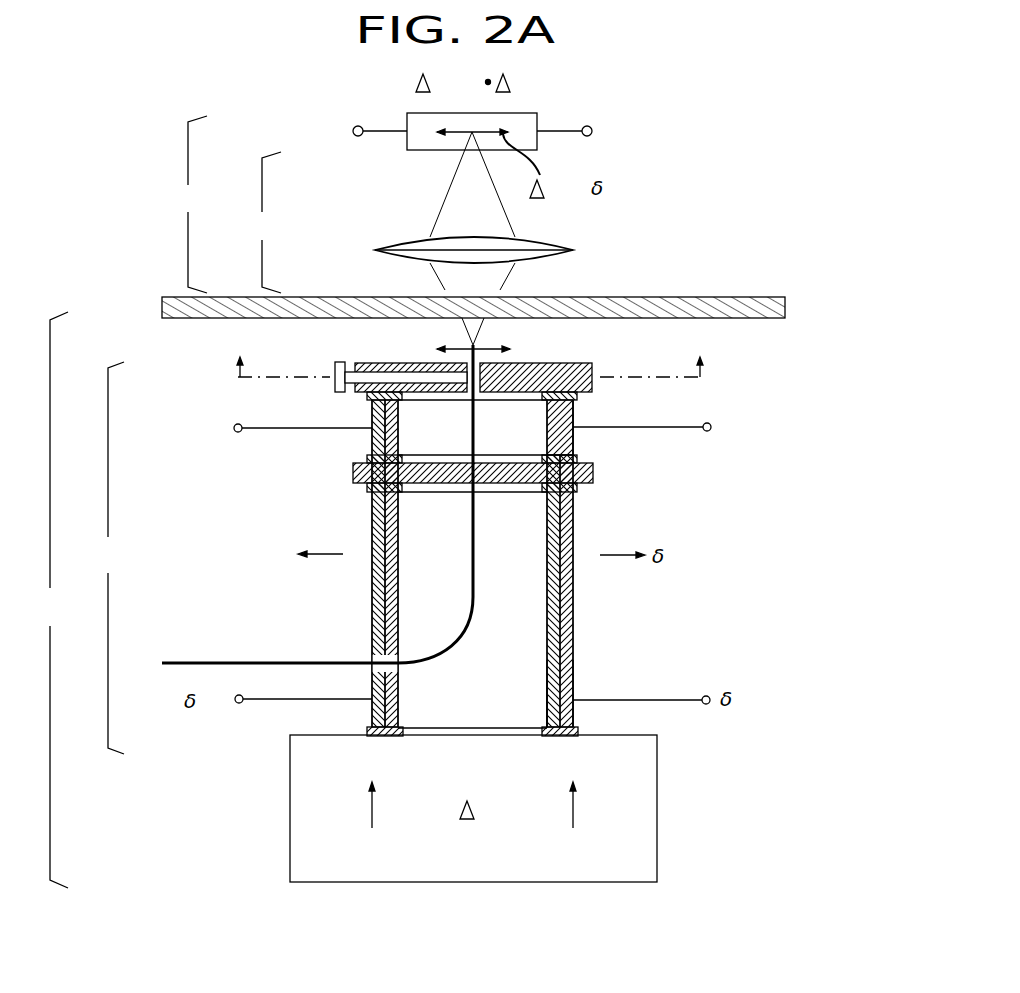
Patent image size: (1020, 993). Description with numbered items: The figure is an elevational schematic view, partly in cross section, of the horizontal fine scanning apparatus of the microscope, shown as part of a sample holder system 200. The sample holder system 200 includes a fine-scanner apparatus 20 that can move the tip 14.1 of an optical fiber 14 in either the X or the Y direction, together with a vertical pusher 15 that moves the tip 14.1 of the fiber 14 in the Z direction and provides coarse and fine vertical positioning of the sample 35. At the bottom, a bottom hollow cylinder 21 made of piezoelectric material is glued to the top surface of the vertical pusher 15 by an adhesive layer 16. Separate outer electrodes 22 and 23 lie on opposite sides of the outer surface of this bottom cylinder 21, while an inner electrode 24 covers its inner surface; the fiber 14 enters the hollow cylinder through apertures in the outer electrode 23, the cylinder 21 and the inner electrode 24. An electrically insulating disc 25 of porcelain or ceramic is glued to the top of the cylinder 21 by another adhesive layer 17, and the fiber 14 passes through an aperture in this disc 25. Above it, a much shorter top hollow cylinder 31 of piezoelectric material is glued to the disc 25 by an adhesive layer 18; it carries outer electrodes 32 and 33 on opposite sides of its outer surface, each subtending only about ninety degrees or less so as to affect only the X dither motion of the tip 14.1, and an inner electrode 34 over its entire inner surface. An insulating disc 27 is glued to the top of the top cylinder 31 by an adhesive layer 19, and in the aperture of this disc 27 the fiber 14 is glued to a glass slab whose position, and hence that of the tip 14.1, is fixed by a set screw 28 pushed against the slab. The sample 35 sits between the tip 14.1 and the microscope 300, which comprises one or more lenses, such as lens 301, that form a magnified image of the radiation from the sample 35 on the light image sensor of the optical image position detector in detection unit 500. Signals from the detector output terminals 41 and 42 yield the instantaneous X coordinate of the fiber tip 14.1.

The optical fiber 14 is at (217, 662).
The tip of the optical fiber 14.1 is at (470, 346).
The vertical pusher 15 is at (636, 815).
The adhesive layer 16 is at (405, 728).
The adhesive layer 17 is at (585, 487).
The adhesive layer 18 is at (416, 455).
The adhesive layer 19 is at (367, 396).
The fine-scanner apparatus 20 is at (109, 558).
The bottom hollow cylinder 21 is at (573, 615).
The outer electrode 22 is at (573, 672).
The outer electrode 23 is at (372, 593).
The inner electrode 24 is at (547, 686).
The electrically insulating disc 25 is at (352, 483).
The insulating disc 27 is at (582, 374).
The set screw 28 is at (338, 364).
The top hollow cylinder 31 is at (578, 438).
The outer electrode 32 is at (578, 418).
The outer electrode 33 is at (367, 442).
The inner electrode 34 is at (547, 424).
The sample 35 is at (788, 300).
The output terminal 41 is at (353, 128).
The output terminal 42 is at (592, 127).
The sample holder system 200 is at (50, 600).
The microscope 300 is at (262, 222).
The lens 301 is at (385, 247).
The detection unit 500 is at (188, 204).